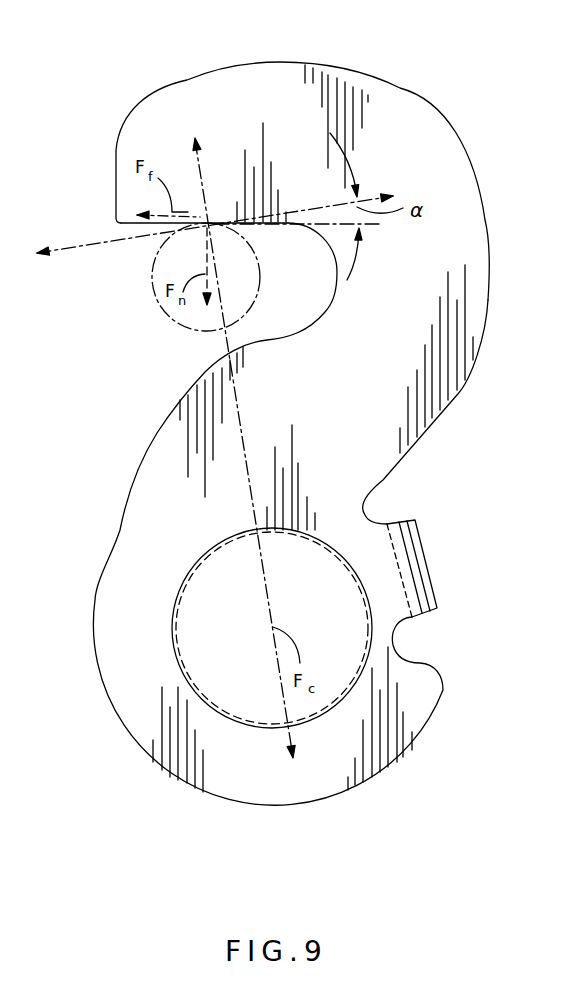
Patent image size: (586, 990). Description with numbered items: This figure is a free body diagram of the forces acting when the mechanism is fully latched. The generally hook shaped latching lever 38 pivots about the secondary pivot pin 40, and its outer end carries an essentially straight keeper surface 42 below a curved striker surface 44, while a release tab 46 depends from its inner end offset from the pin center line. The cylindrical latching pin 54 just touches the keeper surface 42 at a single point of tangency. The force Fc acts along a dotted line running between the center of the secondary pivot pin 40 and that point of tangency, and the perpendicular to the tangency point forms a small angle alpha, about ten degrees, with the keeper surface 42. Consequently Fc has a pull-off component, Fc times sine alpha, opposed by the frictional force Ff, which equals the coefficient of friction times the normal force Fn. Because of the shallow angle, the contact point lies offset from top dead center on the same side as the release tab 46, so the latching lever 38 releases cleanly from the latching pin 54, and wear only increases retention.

The latching lever 38 is at (453, 395).
The secondary pivot pin 40 is at (176, 657).
The keeper surface 42 is at (145, 232).
The curved striker surface 44 is at (185, 80).
The release tab 46 is at (413, 560).
The latching pin 54 is at (182, 327).